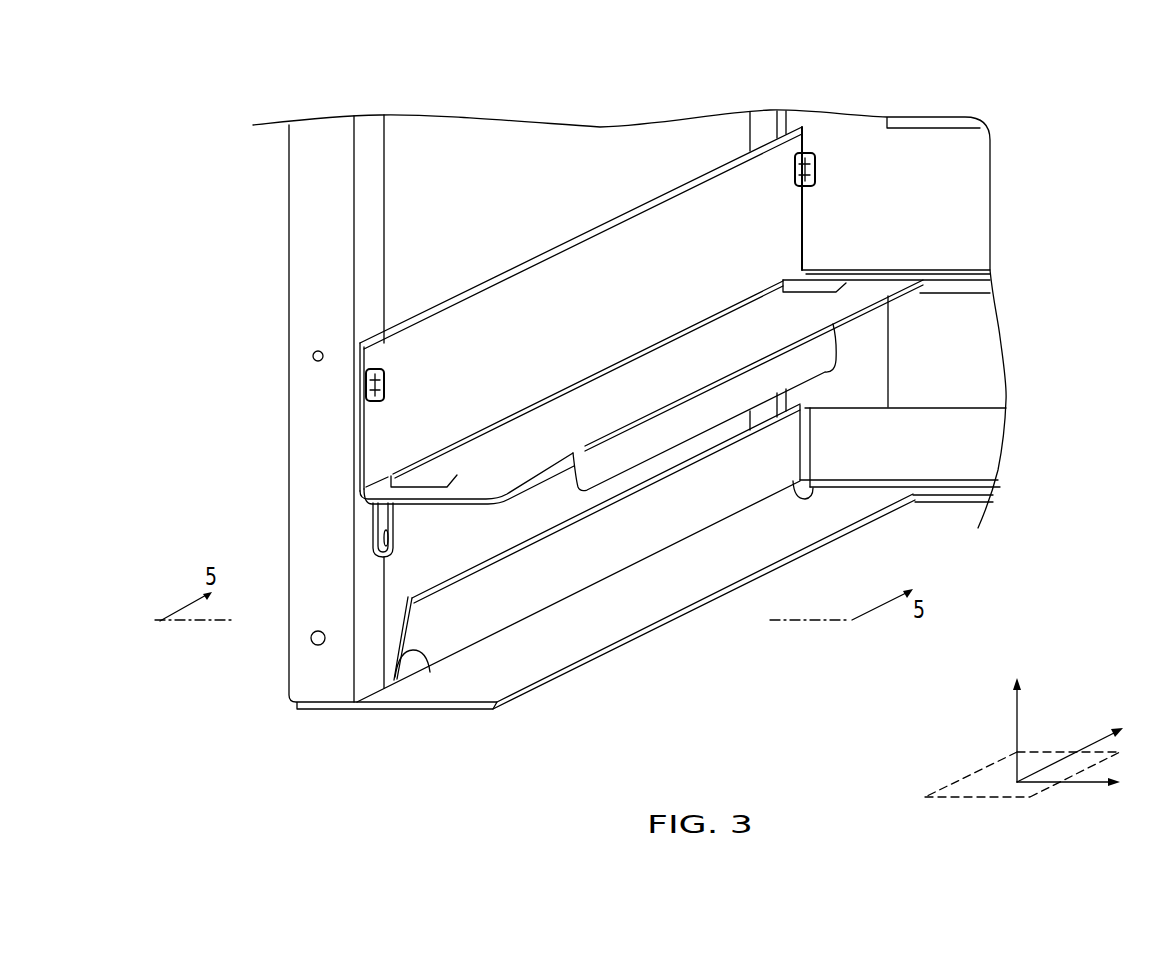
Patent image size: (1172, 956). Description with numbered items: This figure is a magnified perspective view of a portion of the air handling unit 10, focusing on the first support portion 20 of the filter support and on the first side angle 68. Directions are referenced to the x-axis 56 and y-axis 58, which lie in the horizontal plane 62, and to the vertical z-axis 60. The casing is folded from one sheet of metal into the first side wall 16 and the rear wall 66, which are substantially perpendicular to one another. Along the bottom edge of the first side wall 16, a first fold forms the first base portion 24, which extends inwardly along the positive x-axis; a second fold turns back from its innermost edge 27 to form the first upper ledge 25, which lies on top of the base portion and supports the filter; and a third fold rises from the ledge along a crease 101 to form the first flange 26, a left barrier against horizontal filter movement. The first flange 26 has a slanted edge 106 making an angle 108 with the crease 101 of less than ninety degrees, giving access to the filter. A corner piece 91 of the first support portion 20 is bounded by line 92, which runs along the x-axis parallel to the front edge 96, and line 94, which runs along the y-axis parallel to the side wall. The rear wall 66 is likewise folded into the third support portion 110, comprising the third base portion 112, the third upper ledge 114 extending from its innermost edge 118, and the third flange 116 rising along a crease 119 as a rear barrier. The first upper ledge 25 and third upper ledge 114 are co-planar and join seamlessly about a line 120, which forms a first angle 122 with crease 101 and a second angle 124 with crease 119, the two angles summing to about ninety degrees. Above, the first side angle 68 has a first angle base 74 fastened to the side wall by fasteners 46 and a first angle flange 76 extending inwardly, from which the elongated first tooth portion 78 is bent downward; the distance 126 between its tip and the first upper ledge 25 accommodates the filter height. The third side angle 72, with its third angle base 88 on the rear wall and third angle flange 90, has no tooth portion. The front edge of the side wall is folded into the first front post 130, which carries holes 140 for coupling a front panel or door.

The air handling unit 10 is at (834, 75).
The first side wall 16 is at (511, 136).
The first support portion 20 is at (647, 637).
The first base portion 24 is at (393, 710).
The first upper ledge 25 is at (573, 655).
The first flange 26 is at (405, 618).
The innermost edge 27 is at (712, 598).
The fasteners 46 is at (363, 385).
The x-axis 56 is at (1083, 783).
The y-axis 58 is at (1083, 740).
The z-axis 60 is at (1015, 730).
The horizontal plane 62 is at (978, 800).
The rear wall 66 is at (943, 120).
The first side angle 68 is at (430, 338).
The third side angle 72 is at (958, 170).
The first angle base 74 is at (375, 440).
The first angle flange 76 is at (557, 438).
The first elongated tooth portion 78 is at (615, 455).
The third angle base 88 is at (958, 213).
The third angle flange 90 is at (968, 283).
The corner piece 91 is at (475, 712).
The line 92 is at (541, 675).
The line 94 is at (362, 712).
The front edge 96 is at (430, 712).
The crease 101 is at (758, 493).
The slanted edge 106 is at (395, 657).
The angle 108 is at (427, 652).
The third support portion 110 is at (978, 355).
The third base portion 112 is at (940, 503).
The third upper ledge 114 is at (973, 488).
The third flange 116 is at (975, 437).
The innermost edge 118 is at (960, 503).
The crease 119 is at (957, 490).
The line 120 is at (888, 497).
The first angle 122 is at (805, 500).
The second angle 124 is at (873, 487).
The distance 126 is at (718, 563).
The first front post 130 is at (313, 207).
The holes 140 is at (313, 352).